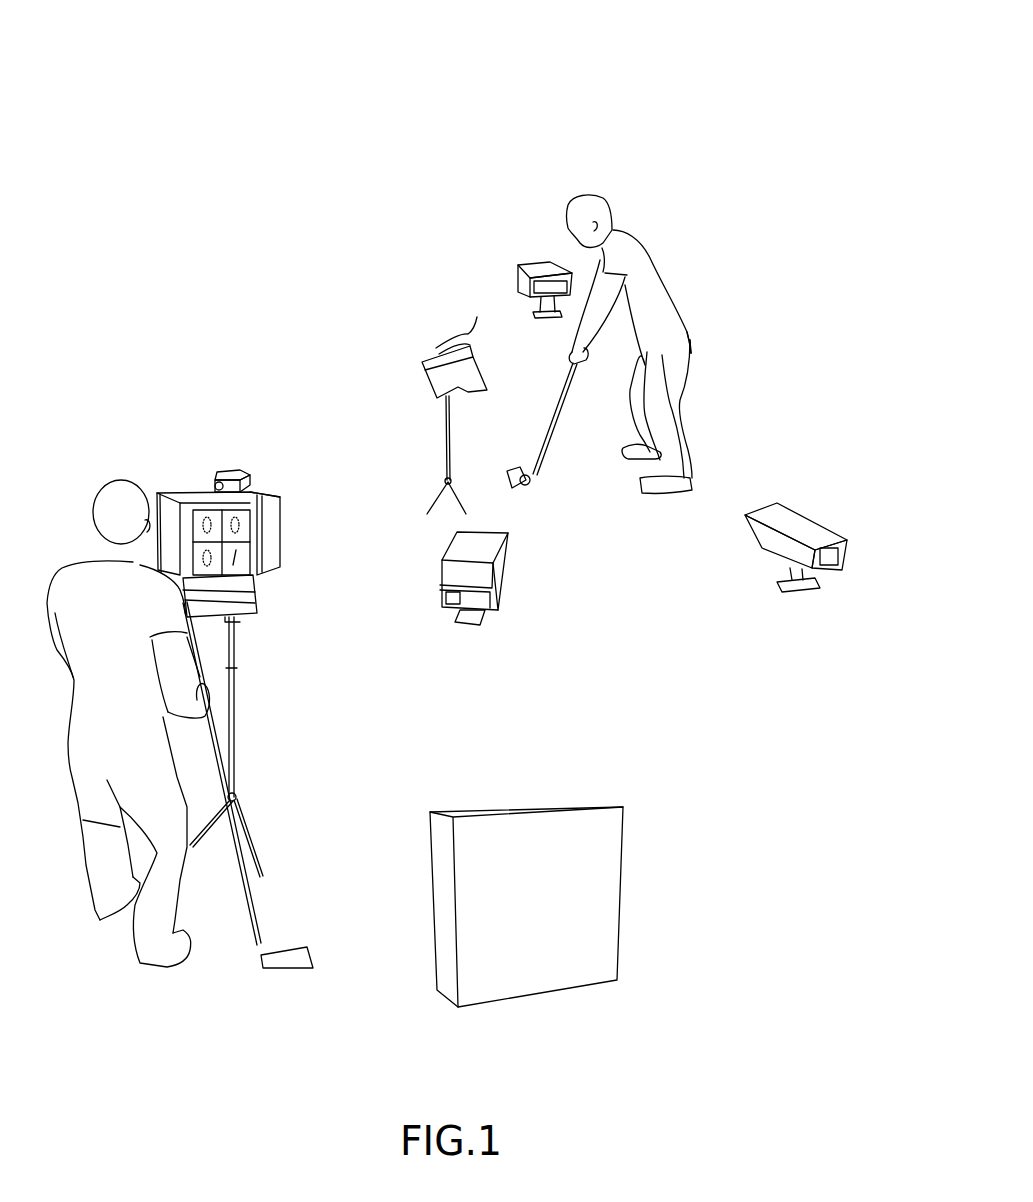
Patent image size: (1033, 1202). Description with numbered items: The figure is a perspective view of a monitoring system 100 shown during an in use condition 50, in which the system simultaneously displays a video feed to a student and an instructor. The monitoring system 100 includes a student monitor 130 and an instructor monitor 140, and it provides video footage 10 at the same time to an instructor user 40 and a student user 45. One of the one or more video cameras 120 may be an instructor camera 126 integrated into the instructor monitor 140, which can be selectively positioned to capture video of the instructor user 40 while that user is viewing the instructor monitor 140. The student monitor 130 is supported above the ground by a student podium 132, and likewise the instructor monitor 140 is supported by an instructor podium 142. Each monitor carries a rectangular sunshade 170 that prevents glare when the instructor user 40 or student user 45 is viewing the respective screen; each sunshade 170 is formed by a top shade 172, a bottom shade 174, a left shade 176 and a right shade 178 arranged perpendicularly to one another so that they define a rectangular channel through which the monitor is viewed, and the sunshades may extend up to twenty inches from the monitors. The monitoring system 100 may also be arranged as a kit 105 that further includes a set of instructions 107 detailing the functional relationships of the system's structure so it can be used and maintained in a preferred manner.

The monitoring system 100 is at (545, 90).
The in use condition 50 is at (582, 114).
The kit 105 is at (617, 142).
The student user 45 is at (650, 224).
The instructor user 40 is at (92, 547).
The student monitor 130 is at (428, 377).
The rectangular sunshades 170 is at (463, 316).
The student podium 132 is at (467, 447).
The top shade 172 is at (272, 585).
The left shade 176 is at (159, 499).
The instructor monitor 140 is at (302, 513).
The instructor camera 126 is at (233, 470).
The right shade 178 is at (282, 604).
The bottom shade 174 is at (256, 631).
The instructor podium 142 is at (256, 725).
The video footage 10 is at (208, 590).
The video cameras 120 is at (500, 566).
The instructions 107 is at (612, 876).